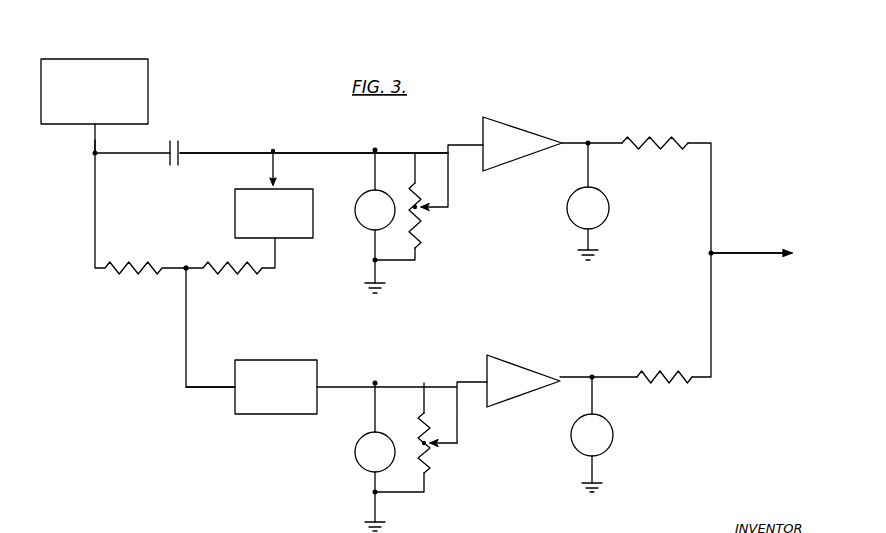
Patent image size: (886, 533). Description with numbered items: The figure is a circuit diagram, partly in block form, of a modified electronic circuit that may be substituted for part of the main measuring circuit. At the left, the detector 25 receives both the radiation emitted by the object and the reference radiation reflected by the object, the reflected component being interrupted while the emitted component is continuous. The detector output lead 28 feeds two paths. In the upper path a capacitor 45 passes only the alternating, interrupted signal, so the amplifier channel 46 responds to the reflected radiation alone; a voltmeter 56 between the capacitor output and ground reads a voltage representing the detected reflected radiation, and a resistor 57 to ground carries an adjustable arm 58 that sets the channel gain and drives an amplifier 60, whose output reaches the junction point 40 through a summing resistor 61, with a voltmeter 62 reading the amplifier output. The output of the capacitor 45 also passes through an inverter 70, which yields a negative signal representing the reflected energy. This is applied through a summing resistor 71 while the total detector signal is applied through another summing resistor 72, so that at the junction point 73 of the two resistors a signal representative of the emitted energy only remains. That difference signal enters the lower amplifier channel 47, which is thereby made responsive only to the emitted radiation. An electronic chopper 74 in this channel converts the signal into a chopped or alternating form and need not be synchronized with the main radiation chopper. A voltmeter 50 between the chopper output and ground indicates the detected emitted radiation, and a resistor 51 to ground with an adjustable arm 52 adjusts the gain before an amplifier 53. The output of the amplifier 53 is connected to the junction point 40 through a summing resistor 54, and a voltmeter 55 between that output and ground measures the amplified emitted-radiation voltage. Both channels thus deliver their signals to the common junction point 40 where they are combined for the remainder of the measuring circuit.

The detector 25 is at (143, 42).
The output lead 28 is at (92, 139).
The capacitor 45 is at (180, 145).
The amplifier channel 46 is at (273, 125).
The inverter 70 is at (233, 205).
The junction point 73 is at (199, 254).
The summing resistor 71 is at (245, 272).
The summing resistor 72 is at (138, 272).
The voltmeter 56 is at (364, 226).
The resistor 57 is at (421, 241).
The adjustable arm 58 is at (430, 204).
The amplifier 60 is at (517, 132).
The summing resistor 61 is at (668, 140).
The voltmeter 62 is at (608, 200).
The junction point 40 is at (713, 252).
The electronic chopper 74 is at (300, 360).
The amplifier channel 47 is at (232, 425).
The voltmeter 50 is at (362, 465).
The resistor 51 is at (432, 467).
The adjustable arm 52 is at (438, 440).
The amplifier 53 is at (510, 366).
The summing resistor 54 is at (675, 374).
The voltmeter 55 is at (612, 442).